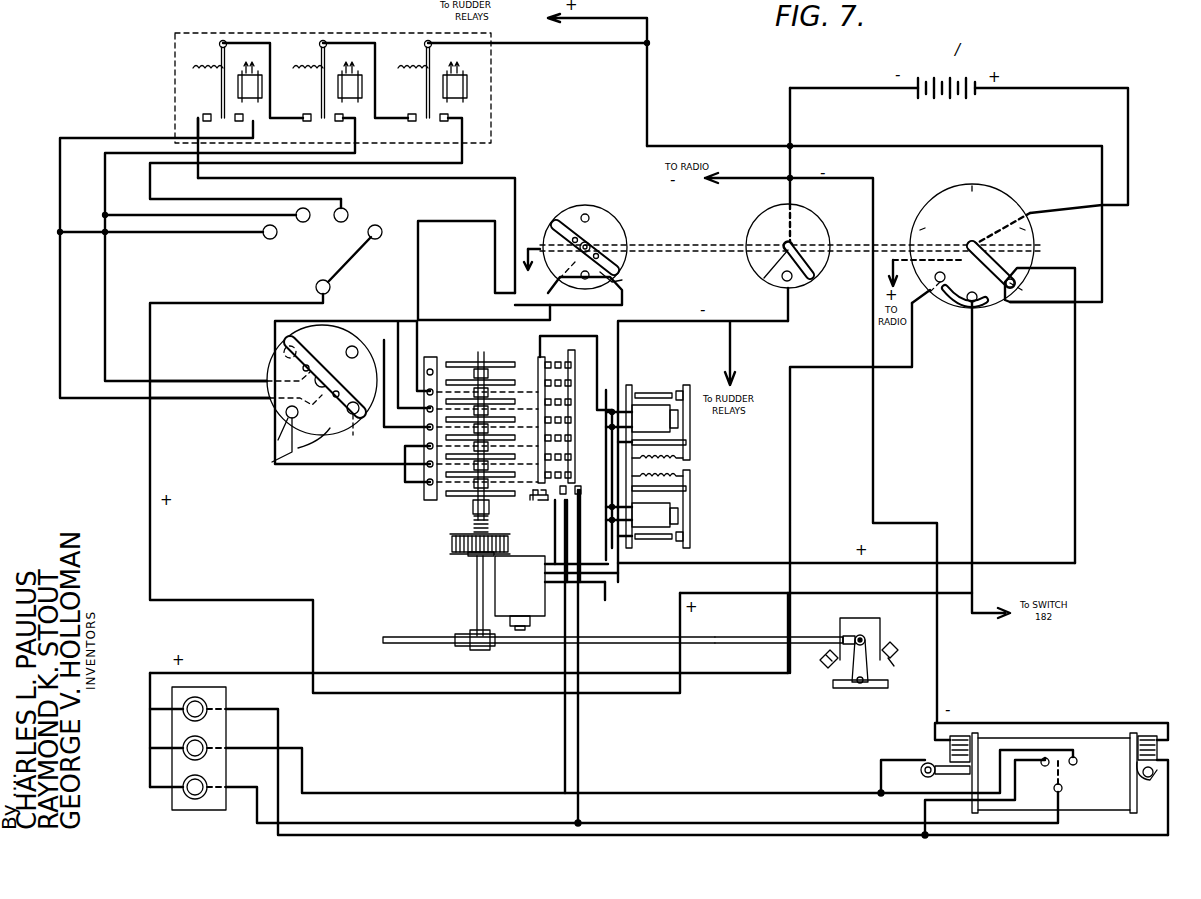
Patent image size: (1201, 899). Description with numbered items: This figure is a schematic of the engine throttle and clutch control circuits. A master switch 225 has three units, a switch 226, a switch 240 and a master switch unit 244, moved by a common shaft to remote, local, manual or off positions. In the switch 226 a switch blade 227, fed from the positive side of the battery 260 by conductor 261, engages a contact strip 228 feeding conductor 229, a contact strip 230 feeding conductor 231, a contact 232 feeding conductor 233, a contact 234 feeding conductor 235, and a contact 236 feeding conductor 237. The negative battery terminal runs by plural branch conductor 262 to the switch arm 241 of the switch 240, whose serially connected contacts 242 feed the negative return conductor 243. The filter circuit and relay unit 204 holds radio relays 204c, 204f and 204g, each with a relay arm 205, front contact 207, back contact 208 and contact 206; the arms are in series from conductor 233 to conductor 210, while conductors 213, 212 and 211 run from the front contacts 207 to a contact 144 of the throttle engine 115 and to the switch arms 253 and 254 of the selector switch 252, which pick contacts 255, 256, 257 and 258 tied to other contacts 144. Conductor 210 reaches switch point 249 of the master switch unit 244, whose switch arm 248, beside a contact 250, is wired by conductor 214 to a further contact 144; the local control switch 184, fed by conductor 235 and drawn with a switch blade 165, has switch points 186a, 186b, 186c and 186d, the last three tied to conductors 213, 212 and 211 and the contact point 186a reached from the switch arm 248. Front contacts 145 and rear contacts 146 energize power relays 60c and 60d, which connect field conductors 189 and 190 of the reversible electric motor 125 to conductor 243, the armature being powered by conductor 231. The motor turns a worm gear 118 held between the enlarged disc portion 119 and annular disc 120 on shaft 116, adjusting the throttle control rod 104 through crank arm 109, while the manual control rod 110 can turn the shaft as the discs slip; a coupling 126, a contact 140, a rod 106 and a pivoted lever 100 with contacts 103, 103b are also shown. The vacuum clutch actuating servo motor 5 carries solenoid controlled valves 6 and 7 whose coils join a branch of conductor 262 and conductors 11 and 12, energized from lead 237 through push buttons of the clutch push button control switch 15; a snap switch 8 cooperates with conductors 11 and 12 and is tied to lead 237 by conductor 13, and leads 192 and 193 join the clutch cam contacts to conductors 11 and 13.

The vacuum clutch actuating servo motor 5 is at (1115, 798).
The solenoid controlled valve 6 is at (940, 744).
The solenoid controlled valve 7 is at (1160, 752).
The snap switch 8 is at (1087, 771).
The conductor 11 is at (718, 794).
The conductor 12 is at (768, 822).
The conductor 13 is at (705, 824).
The clutch push button control switch 15 is at (218, 730).
The power relay 60c is at (665, 422).
The power relay 60d is at (665, 515).
The pivoted lever switch 100 is at (878, 636).
The contact 103 is at (855, 668).
The contact 103b is at (898, 658).
The throttle control rod 104 is at (703, 640).
The actuating rod 106 is at (803, 638).
The crank arm 109 is at (474, 646).
The manual control rod 110 is at (422, 642).
The throttle engine 115 is at (453, 434).
The shaft 116 is at (475, 578).
The worm gear 118 is at (450, 544).
The enlarged disc portion 119 is at (465, 555).
The annular disc 120 is at (460, 532).
The reversible electric motor 125 is at (520, 593).
The cam shaft coupling 126 is at (489, 507).
The contact 140 is at (578, 495).
The contact 144 is at (553, 362).
The front contact 145 is at (538, 358).
The contact 146 is at (572, 362).
The switch blade 165 is at (345, 272).
The local control switch 184 is at (224, 236).
The contact point 186a is at (387, 242).
The switch point 186b is at (352, 212).
The switch point 186c is at (302, 225).
The switch point 186d is at (259, 245).
The field conductor 189 is at (600, 584).
The field conductor 190 is at (612, 583).
The lead 192 is at (565, 735).
The lead 193 is at (585, 758).
The filter circuit and relay unit 204 is at (492, 108).
The relay 204c is at (262, 78).
The radio relay 204f is at (364, 78).
The radio relay 204g is at (536, 78).
The relay arm 205 is at (421, 90).
The relay contact 206 is at (326, 127).
The front contact 207 is at (358, 88).
The back contact 208 is at (206, 114).
The conductor 210 is at (270, 178).
The conductor 211 is at (60, 190).
The conductor 212 is at (355, 157).
The conductor 213 is at (462, 160).
The conductor 214 is at (484, 270).
The master switch 225 is at (935, 200).
The switch 226 is at (1032, 212).
The switch blade 227 is at (985, 257).
The contact strip 228 is at (955, 300).
The conductor 229 is at (893, 258).
The contact strip 230 is at (990, 302).
The conductor 231 is at (1080, 368).
The contact 232 is at (1020, 283).
The conductor 233 is at (598, 55).
The contact 234 is at (976, 302).
The conductor 235 is at (232, 305).
The contact 236 is at (940, 284).
The conductor 237 is at (916, 343).
The switch 240 is at (822, 232).
The switch arm 241 is at (768, 276).
The contacts 242 is at (797, 280).
The conductor 243 is at (738, 350).
The master switch unit 244 is at (608, 232).
The switch arm 248 is at (605, 258).
The switch point 249 is at (612, 270).
The contact 250 is at (606, 285).
The selector switch 252 is at (270, 413).
The switch arm 253 is at (275, 372).
The switch arm 254 is at (307, 441).
The contact 255 is at (284, 352).
The contact 256 is at (356, 347).
The contact 257 is at (272, 435).
The contact 258 is at (346, 428).
The battery 260 is at (940, 70).
The conductor 261 is at (1130, 150).
The plural branch conductor 262 is at (748, 182).